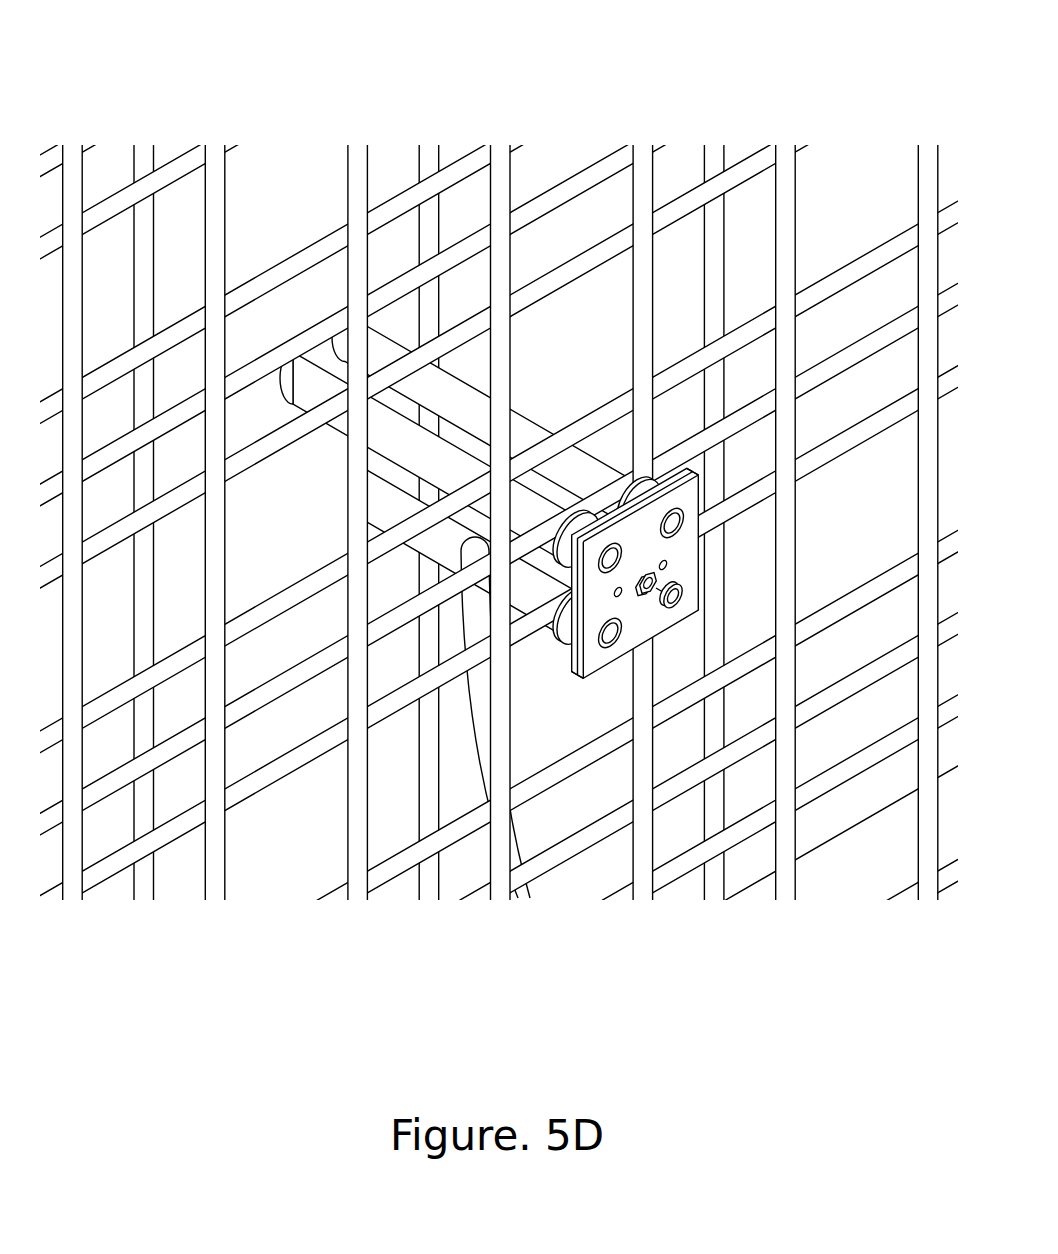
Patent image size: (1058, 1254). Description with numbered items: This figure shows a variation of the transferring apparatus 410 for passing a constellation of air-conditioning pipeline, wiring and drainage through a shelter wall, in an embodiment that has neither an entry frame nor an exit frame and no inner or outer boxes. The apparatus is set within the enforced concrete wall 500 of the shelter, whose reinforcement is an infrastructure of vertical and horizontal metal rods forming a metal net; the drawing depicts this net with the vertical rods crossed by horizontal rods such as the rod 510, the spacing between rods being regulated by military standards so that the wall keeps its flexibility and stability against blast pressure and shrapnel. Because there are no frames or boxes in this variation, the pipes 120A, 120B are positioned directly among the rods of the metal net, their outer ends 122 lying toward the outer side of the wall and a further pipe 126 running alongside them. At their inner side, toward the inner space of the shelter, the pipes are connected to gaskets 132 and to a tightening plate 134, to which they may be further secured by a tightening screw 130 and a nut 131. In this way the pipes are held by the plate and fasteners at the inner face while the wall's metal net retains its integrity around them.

The wire mesh enclosure 410 is at (500, 627).
The enforced concrete wall 500 is at (301, 160).
The horizontal wire 510 is at (597, 178).
The first arm 120A is at (523, 423).
The second arm 120B is at (403, 483).
The arm end 122 is at (291, 383).
The third arm 126 is at (526, 592).
The tightening screw 130 is at (697, 594).
The nut 131 is at (650, 600).
The gaskets 132 is at (651, 490).
The plate 134 is at (690, 548).